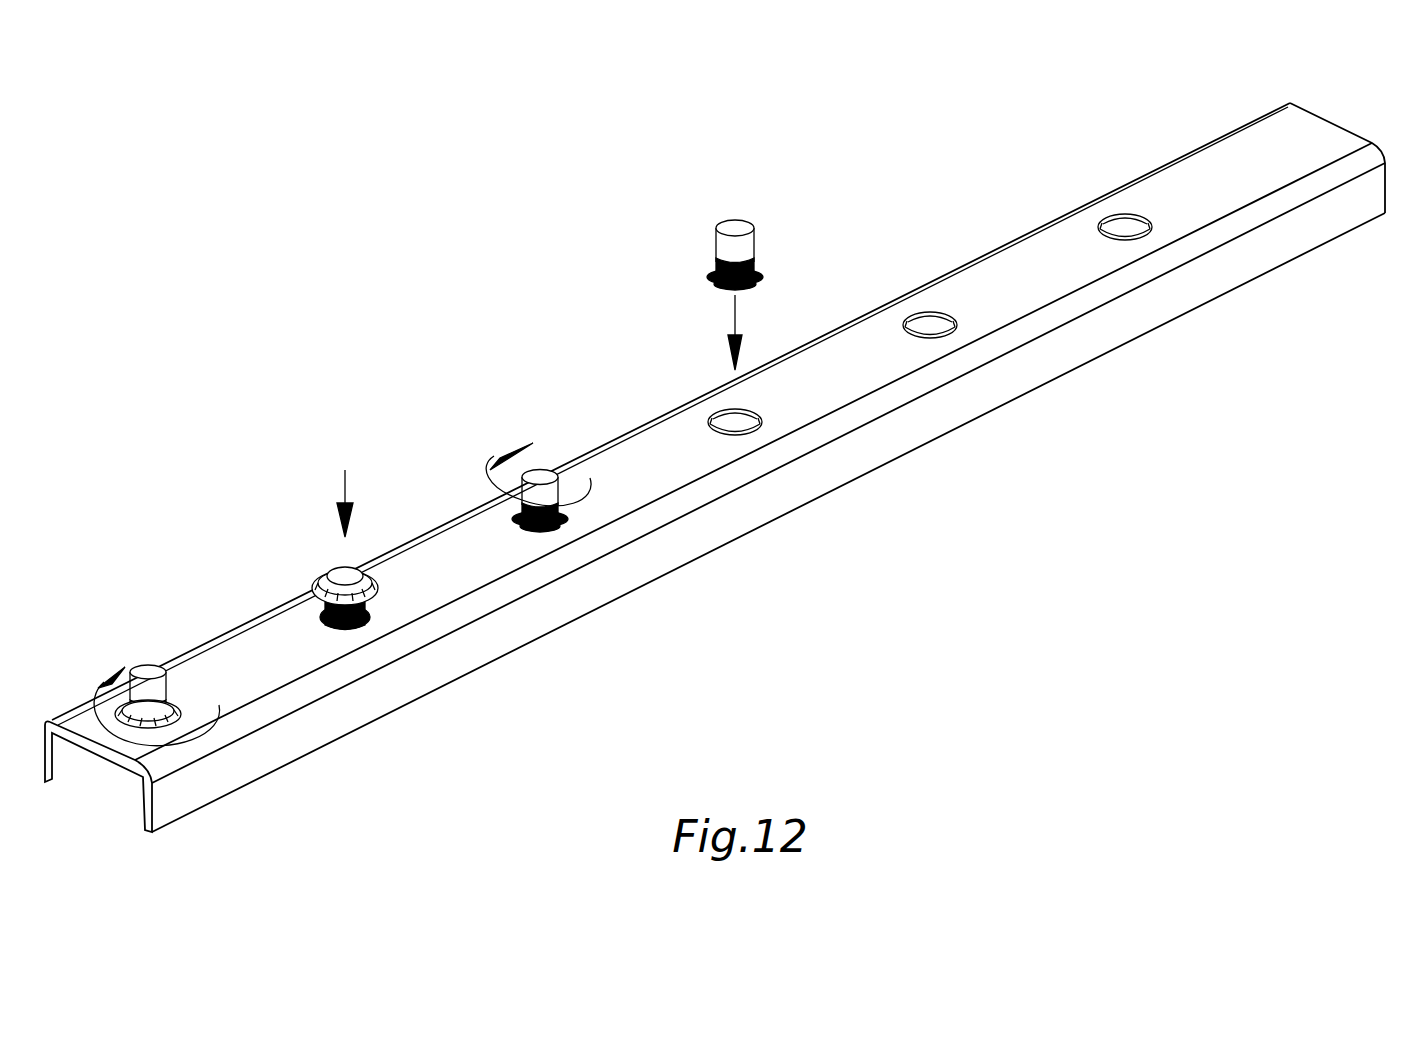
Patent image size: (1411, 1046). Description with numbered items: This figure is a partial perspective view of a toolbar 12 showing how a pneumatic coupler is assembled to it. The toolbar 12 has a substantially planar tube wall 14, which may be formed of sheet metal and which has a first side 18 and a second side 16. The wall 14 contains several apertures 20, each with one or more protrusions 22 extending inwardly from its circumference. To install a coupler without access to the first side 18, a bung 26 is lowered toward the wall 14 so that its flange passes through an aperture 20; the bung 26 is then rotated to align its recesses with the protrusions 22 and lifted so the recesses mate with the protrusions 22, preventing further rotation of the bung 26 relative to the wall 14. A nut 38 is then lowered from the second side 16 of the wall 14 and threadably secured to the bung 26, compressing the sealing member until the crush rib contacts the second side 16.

The toolbar 12 is at (715, 467).
The tube wall 14 is at (640, 473).
The second side 16 is at (715, 467).
The first side 18 is at (128, 765).
The aperture 20 is at (1125, 224).
The protrusion 22 is at (912, 318).
The bung 26 is at (723, 218).
The nut 38 is at (320, 585).